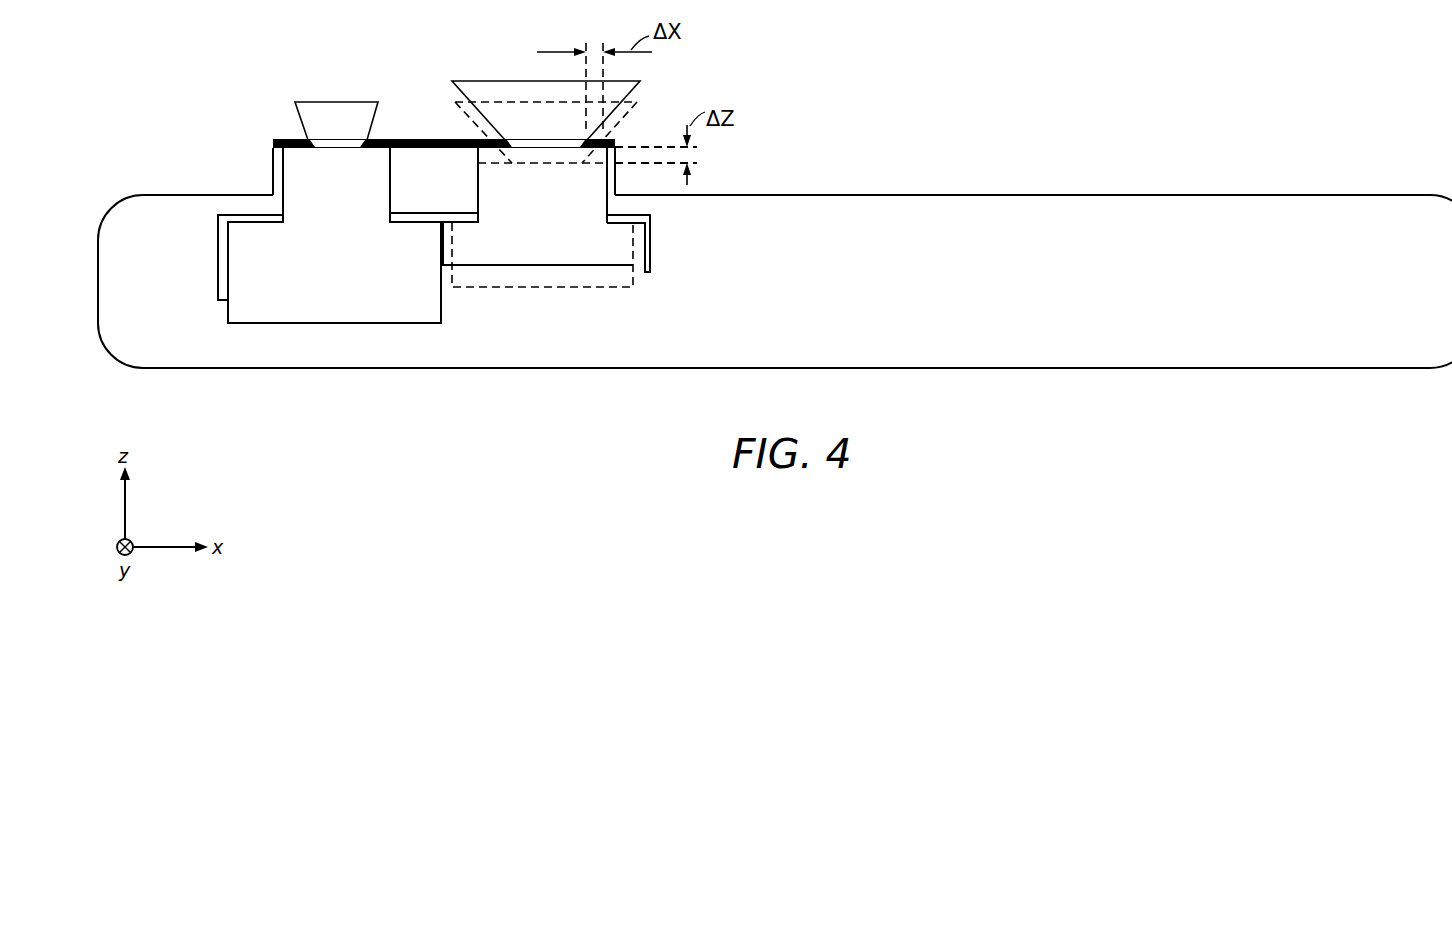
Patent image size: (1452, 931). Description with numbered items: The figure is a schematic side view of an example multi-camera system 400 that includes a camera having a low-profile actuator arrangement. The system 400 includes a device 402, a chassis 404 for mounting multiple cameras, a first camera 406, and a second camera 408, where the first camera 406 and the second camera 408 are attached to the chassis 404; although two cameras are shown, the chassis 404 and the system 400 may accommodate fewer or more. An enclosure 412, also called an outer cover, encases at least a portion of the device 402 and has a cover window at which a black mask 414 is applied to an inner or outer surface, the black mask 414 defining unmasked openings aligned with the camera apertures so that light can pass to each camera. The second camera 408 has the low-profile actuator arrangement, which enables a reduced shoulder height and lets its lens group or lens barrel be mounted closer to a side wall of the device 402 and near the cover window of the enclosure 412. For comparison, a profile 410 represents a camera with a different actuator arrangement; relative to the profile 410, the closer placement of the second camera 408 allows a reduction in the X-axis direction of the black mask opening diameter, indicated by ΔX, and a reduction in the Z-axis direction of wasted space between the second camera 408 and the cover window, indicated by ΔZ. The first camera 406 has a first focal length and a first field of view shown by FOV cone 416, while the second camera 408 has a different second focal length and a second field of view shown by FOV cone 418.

The multi-camera system 400 is at (1066, 74).
The device 402 is at (1386, 341).
The chassis 404 is at (652, 247).
The first camera 406 is at (349, 270).
The second camera 408 is at (559, 228).
The profile 410 is at (640, 293).
The enclosure 412 is at (178, 188).
The black mask 414 is at (288, 138).
The FOV cone 416 is at (321, 92).
The FOV cone 418 is at (505, 72).